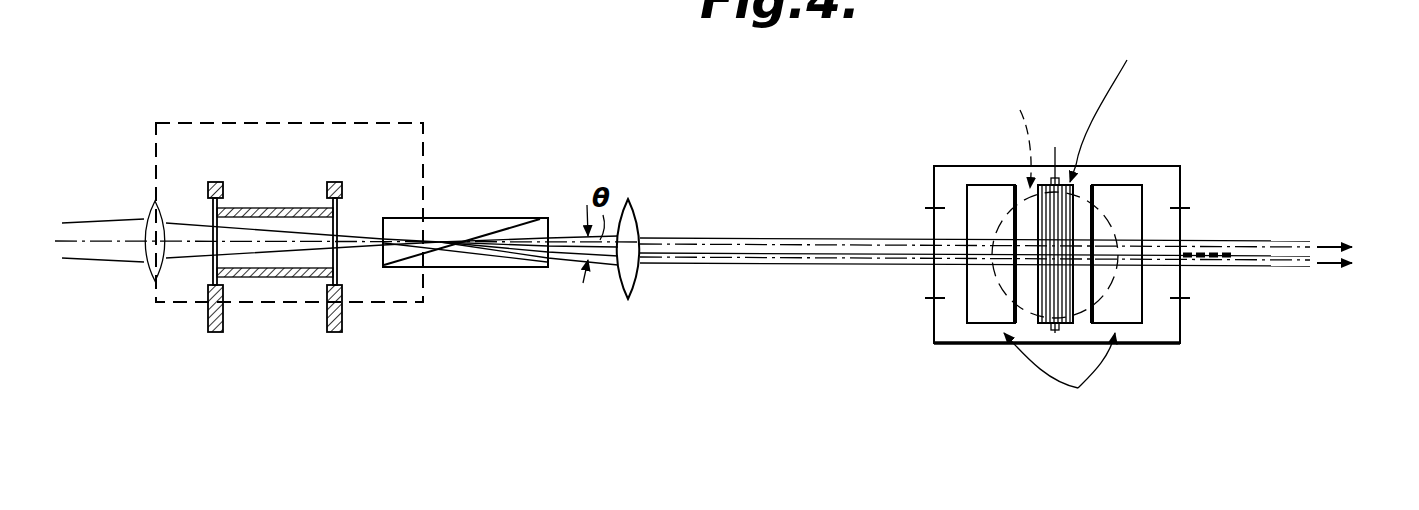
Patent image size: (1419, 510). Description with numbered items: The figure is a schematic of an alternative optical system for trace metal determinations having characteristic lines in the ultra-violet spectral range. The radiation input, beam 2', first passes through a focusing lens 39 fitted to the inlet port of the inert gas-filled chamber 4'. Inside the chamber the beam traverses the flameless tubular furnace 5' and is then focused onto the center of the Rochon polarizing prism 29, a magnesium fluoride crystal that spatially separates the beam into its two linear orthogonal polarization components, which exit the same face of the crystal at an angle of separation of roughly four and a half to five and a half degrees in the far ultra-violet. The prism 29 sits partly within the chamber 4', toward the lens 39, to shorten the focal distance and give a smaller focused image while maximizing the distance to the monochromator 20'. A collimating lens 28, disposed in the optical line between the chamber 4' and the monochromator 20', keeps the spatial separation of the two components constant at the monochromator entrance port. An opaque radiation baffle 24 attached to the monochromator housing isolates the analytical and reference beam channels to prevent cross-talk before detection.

The incident beam 2' is at (347, 278).
The focusing lens 39 is at (142, 219).
The inert gas-filled chamber 4' is at (376, 167).
The flameless tubular furnace 5' is at (305, 227).
The Rochon polarizing prism 29 is at (514, 216).
The collimating lens 28 is at (639, 293).
The monochromator 20' is at (1135, 220).
The opaque radiation baffle 24 is at (1212, 249).